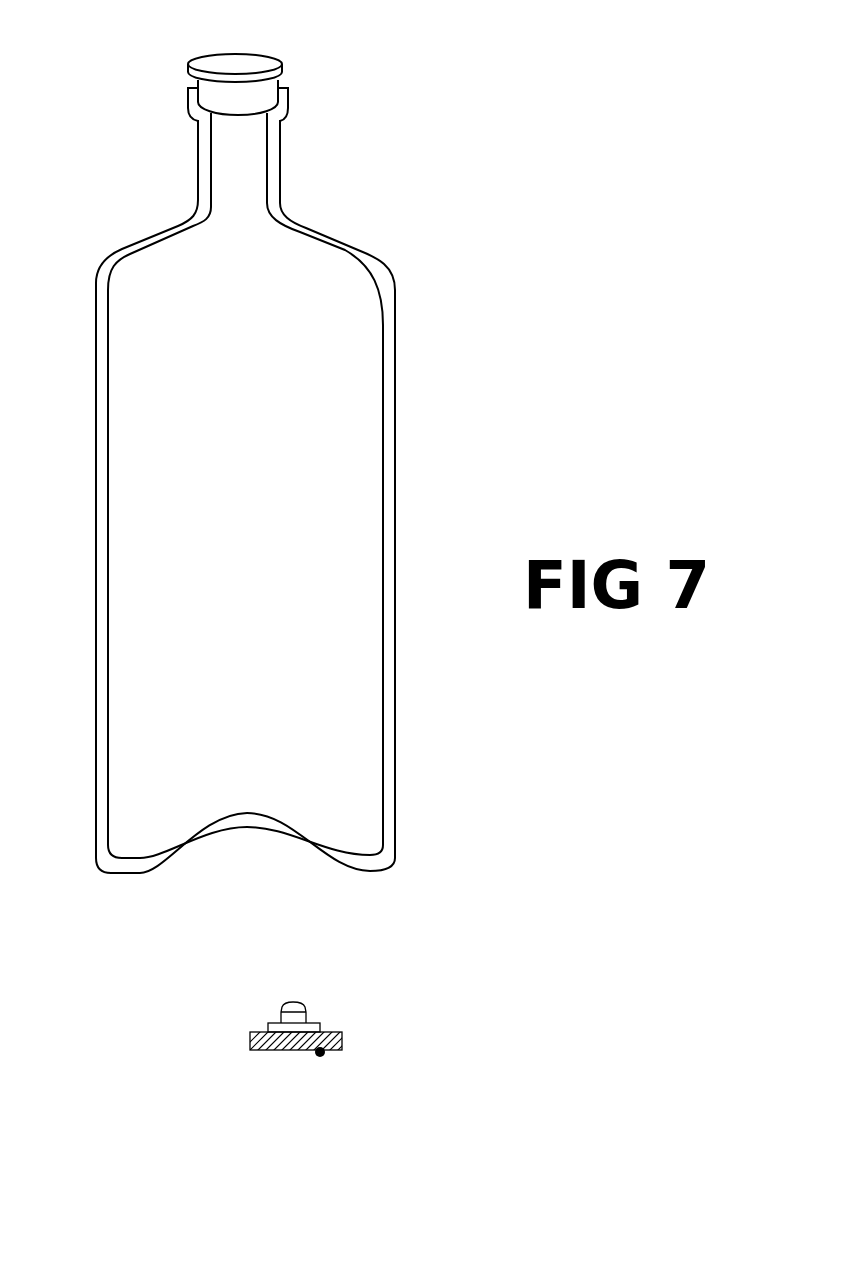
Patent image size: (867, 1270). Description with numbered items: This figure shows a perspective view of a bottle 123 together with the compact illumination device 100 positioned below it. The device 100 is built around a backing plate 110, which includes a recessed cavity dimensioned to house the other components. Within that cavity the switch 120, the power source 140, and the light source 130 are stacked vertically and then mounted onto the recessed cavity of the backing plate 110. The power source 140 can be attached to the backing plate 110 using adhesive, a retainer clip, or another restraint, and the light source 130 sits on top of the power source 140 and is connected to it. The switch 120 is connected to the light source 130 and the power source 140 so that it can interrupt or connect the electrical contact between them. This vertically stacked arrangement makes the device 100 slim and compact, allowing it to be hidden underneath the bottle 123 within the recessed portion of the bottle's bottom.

The bottle 123 is at (315, 463).
The device 100 is at (306, 1028).
The backing plate 110 is at (250, 1035).
The switch 120 is at (321, 1057).
The light source 130 is at (280, 1003).
The power source 140 is at (318, 1023).